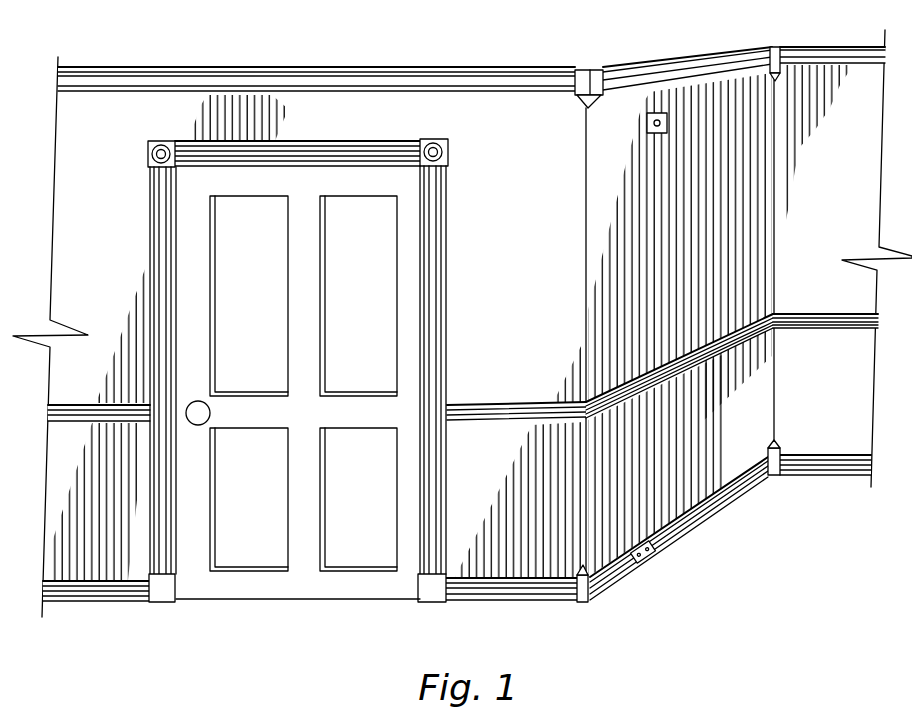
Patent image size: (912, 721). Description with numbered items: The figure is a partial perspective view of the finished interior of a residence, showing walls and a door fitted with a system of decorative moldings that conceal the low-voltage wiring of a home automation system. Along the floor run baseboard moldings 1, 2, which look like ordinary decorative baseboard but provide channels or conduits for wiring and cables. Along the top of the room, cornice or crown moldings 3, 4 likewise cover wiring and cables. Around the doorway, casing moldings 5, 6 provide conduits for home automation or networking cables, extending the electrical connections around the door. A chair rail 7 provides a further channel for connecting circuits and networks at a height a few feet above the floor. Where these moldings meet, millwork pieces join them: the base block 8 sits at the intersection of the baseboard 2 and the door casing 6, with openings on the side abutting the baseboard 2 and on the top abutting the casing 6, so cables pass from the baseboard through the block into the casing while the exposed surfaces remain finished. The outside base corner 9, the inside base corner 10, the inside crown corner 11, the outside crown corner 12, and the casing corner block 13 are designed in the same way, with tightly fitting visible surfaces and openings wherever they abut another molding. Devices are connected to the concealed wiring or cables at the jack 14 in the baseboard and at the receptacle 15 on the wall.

The baseboard molding 1 is at (710, 520).
The baseboard molding 2 is at (515, 605).
The crown molding 3 is at (478, 66).
The crown molding 4 is at (672, 62).
The casing molding 5 is at (370, 140).
The door casing 6 is at (448, 234).
The chair rail 7 is at (750, 340).
The base block 8 is at (418, 600).
The outside base corner 9 is at (585, 604).
The inside base corner 10 is at (778, 478).
The inside crown corner 11 is at (770, 76).
The outside crown corner 12 is at (578, 100).
The casing corner block 13 is at (148, 142).
The jack 14 is at (650, 560).
The receptacle 15 is at (647, 123).